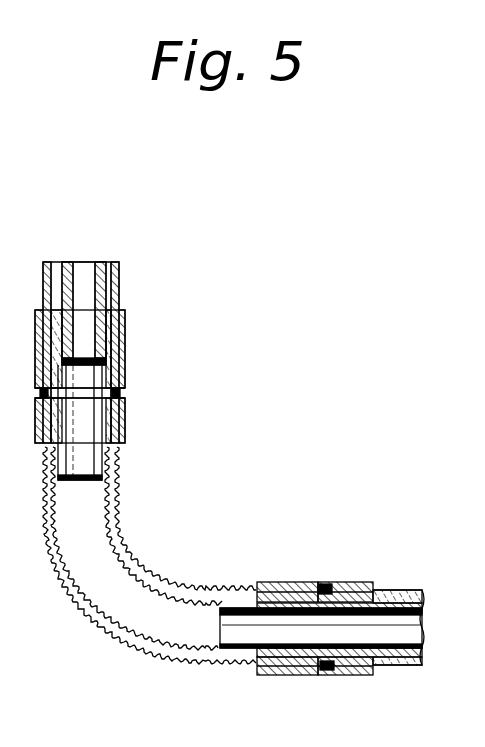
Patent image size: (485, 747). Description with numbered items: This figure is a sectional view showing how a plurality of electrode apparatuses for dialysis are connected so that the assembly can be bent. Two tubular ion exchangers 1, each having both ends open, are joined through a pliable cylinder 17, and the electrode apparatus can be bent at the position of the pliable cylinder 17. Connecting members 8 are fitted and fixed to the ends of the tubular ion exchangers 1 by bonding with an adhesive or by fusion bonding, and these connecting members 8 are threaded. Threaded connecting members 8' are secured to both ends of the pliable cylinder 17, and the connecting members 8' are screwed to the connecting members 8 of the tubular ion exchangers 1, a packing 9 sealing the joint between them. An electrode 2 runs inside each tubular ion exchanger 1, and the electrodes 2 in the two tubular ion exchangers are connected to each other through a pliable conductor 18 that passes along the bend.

The tubular ion exchanger 1 is at (120, 283).
The electrode 2 is at (80, 272).
The connecting member 8 is at (204, 492).
The threaded connecting member 8' is at (176, 536).
The packing 9 is at (125, 392).
The pliable cylinder 17 is at (123, 518).
The pliable conductor 18 is at (127, 637).